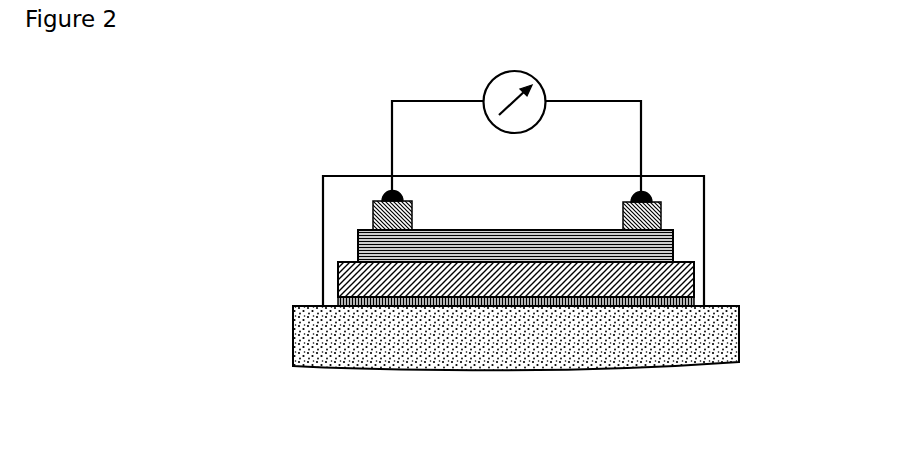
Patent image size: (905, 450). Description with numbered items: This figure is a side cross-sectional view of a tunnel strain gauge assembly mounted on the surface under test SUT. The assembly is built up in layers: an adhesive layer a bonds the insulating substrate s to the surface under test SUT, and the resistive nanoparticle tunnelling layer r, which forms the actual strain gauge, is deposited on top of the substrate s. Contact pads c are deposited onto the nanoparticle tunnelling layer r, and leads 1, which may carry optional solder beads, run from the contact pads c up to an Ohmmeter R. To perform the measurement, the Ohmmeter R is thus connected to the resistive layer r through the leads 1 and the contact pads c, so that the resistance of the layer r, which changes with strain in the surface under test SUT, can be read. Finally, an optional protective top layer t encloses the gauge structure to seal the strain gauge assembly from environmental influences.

The leads 1 is at (394, 123).
The Ohmmeter R is at (518, 100).
The contact pads c is at (382, 200).
The protective top layer t is at (568, 192).
The resistive nanoparticle tunnelling layer r is at (665, 247).
The insulating substrate s is at (658, 280).
The adhesive layer a is at (683, 300).
The surface under test SUT is at (647, 332).